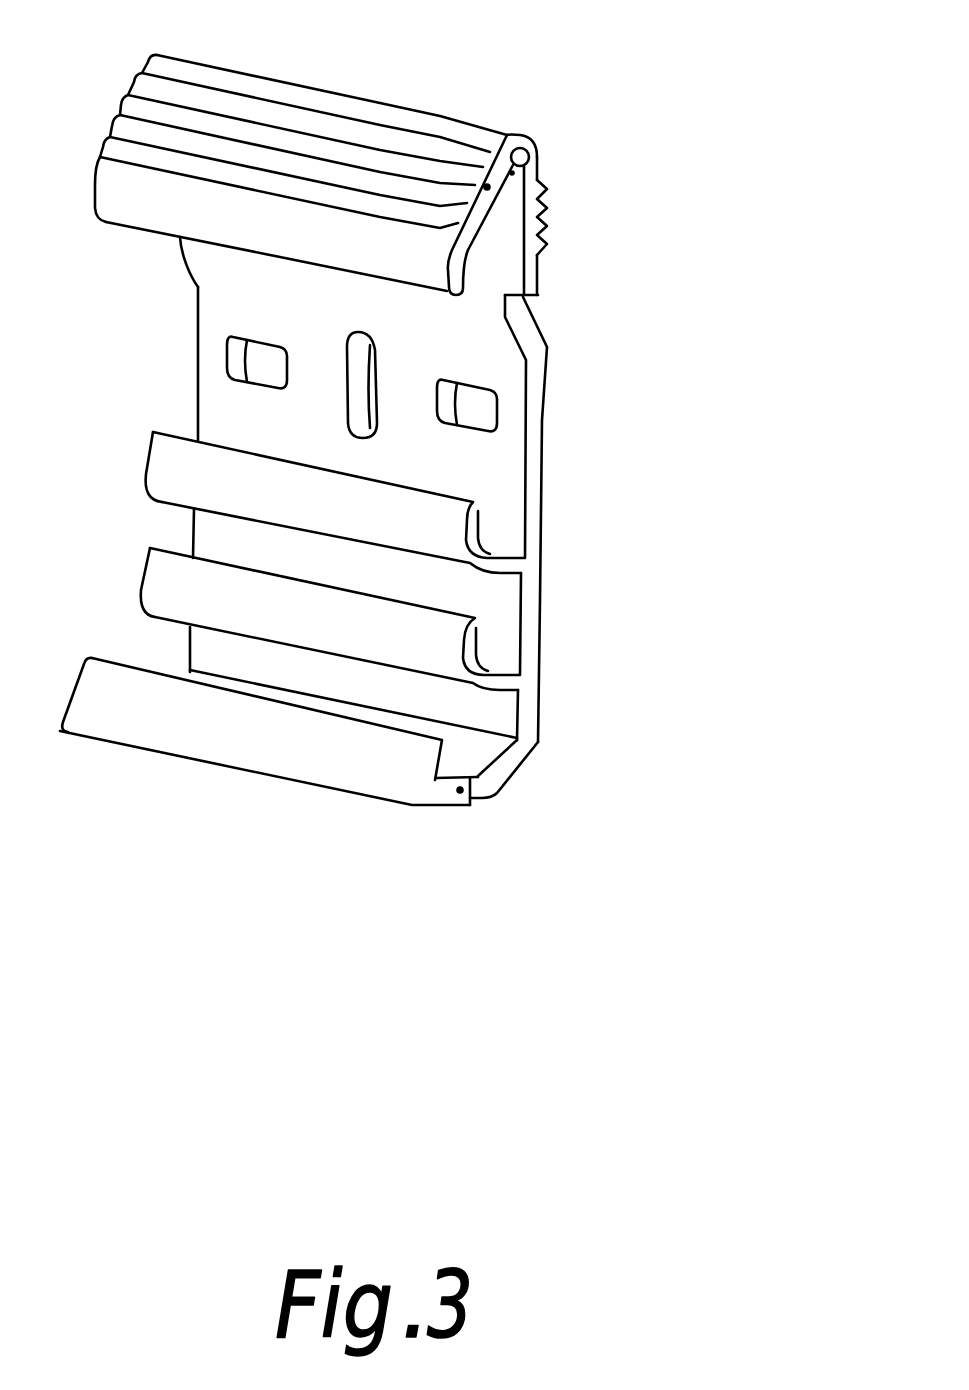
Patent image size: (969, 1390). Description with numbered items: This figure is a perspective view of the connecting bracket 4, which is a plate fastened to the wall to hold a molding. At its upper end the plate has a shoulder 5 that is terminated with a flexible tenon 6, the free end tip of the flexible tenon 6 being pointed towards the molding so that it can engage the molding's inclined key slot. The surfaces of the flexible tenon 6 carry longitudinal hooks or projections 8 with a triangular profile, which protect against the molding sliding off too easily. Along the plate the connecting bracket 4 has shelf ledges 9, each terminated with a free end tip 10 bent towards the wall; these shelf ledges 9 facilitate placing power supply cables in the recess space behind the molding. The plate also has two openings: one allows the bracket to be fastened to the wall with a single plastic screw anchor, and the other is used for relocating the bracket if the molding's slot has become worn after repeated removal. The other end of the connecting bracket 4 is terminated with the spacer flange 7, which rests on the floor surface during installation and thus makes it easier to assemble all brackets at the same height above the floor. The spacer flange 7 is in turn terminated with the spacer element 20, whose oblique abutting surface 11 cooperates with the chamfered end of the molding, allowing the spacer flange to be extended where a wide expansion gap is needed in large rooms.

The connecting bracket 4 is at (502, 485).
The shoulder 5 is at (548, 321).
The flexible tenon 6 is at (548, 150).
The spacer flange 7 is at (470, 810).
The longitudinal hooks or projections 8 is at (550, 231).
The shelf ledges 9 is at (497, 563).
The free end tip 10 is at (500, 618).
The oblique abutting surface 11 is at (327, 762).
The spacer element 20 is at (462, 760).